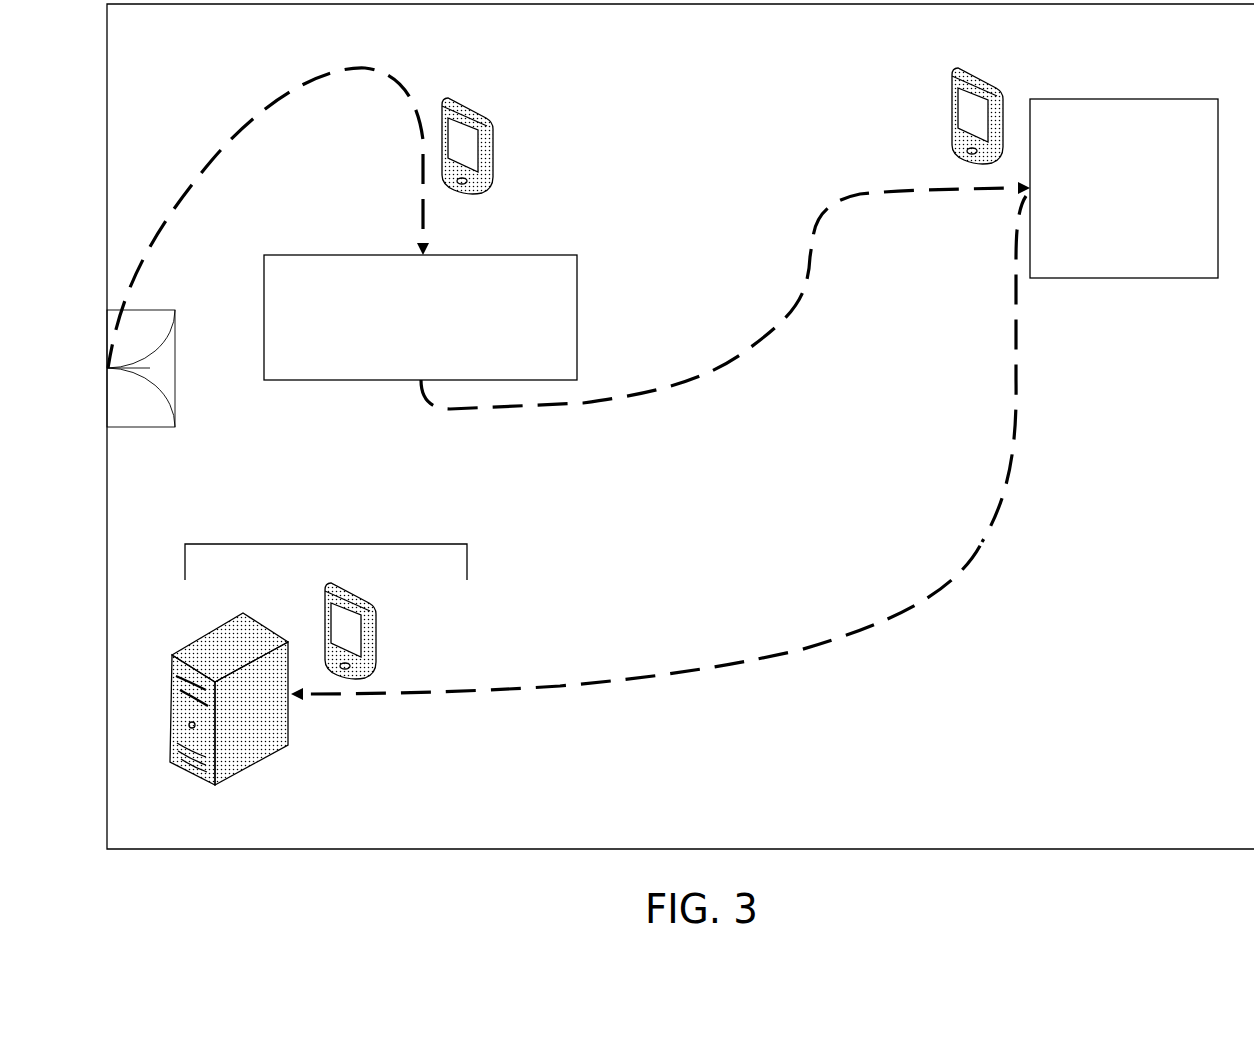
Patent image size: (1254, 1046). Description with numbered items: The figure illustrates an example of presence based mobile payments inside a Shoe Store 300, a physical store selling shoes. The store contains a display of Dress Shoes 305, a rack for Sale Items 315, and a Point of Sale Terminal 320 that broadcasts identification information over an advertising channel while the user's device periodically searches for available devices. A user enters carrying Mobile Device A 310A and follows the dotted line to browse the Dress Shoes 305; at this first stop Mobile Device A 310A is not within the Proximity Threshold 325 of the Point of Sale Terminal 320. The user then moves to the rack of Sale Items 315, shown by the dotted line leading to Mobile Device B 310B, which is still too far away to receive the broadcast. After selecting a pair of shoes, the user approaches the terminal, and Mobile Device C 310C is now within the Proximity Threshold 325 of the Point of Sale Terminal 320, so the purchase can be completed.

The Shoe Store 300 is at (684, 65).
The Dress Shoes 305 is at (402, 340).
The Mobile Device A 310A is at (510, 149).
The Mobile Device B 310B is at (925, 124).
The Mobile Device C 310C is at (401, 628).
The Sale Items 315 is at (1106, 210).
The Point of Sale Terminal 320 is at (275, 759).
The Proximity Threshold 325 is at (326, 537).